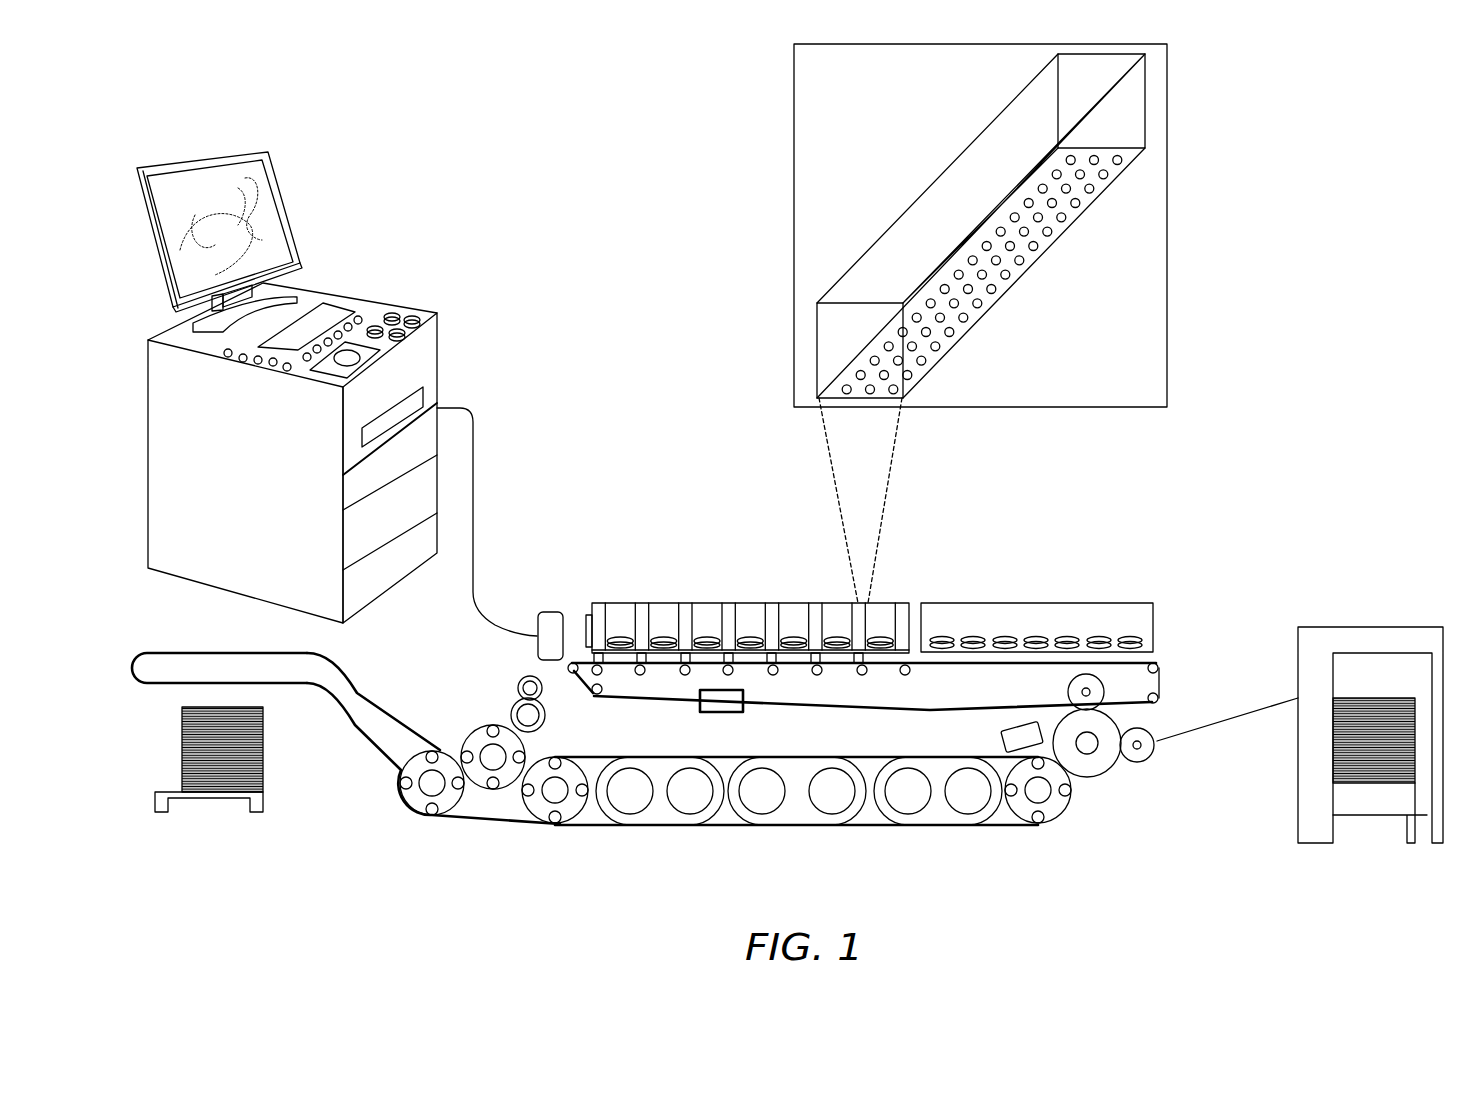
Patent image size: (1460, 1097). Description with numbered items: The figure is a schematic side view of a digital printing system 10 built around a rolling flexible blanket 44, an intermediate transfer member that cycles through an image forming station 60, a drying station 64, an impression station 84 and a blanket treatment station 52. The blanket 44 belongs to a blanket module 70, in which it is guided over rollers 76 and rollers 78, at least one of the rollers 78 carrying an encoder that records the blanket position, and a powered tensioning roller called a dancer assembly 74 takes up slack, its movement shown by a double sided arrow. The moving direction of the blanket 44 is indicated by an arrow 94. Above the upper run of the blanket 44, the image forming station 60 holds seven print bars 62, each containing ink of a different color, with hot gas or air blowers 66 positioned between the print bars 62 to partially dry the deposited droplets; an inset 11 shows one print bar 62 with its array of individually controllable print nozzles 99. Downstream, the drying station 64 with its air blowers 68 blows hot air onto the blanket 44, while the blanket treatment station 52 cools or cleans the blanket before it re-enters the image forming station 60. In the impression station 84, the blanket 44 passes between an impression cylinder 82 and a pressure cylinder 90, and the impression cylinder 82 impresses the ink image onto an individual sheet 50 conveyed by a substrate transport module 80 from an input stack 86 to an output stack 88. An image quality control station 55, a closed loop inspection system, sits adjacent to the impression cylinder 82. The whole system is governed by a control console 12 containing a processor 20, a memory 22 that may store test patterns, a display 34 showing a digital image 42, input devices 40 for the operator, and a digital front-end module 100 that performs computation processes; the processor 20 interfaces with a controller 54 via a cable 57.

The digital printing system 10 is at (1310, 340).
The inset 11 is at (795, 78).
The control console 12 is at (130, 133).
The processor 20 is at (403, 510).
The memory 22 is at (403, 570).
The display 34 is at (273, 168).
The input devices 40 is at (373, 313).
The digital image 42 is at (175, 183).
The blanket 44 is at (1037, 707).
The sheet 50 is at (192, 703).
The blanket treatment station 52 is at (718, 712).
The controller 54 is at (537, 643).
The image quality control station 55 is at (1003, 733).
The cable 57 is at (472, 568).
The image forming station 60 is at (555, 488).
The print bars 62 is at (813, 146).
The drying station 64 is at (1059, 530).
The hot gas or air blowers 66 is at (622, 640).
The air blowers 68 is at (1005, 638).
The blanket module 70 is at (1178, 632).
The dancer assembly 74 is at (1155, 707).
The rollers 76 is at (597, 694).
The rollers 78 is at (685, 675).
The substrate transport module 80 is at (691, 867).
The impression cylinder 82 is at (1092, 750).
The impression station 84 is at (1094, 795).
The input stack 86 is at (1375, 773).
The output stack 88 is at (190, 793).
The pressure cylinder 90 is at (1104, 688).
The arrow 94 is at (968, 678).
The print nozzles 99 is at (997, 228).
The digital front-end module 100 is at (343, 487).